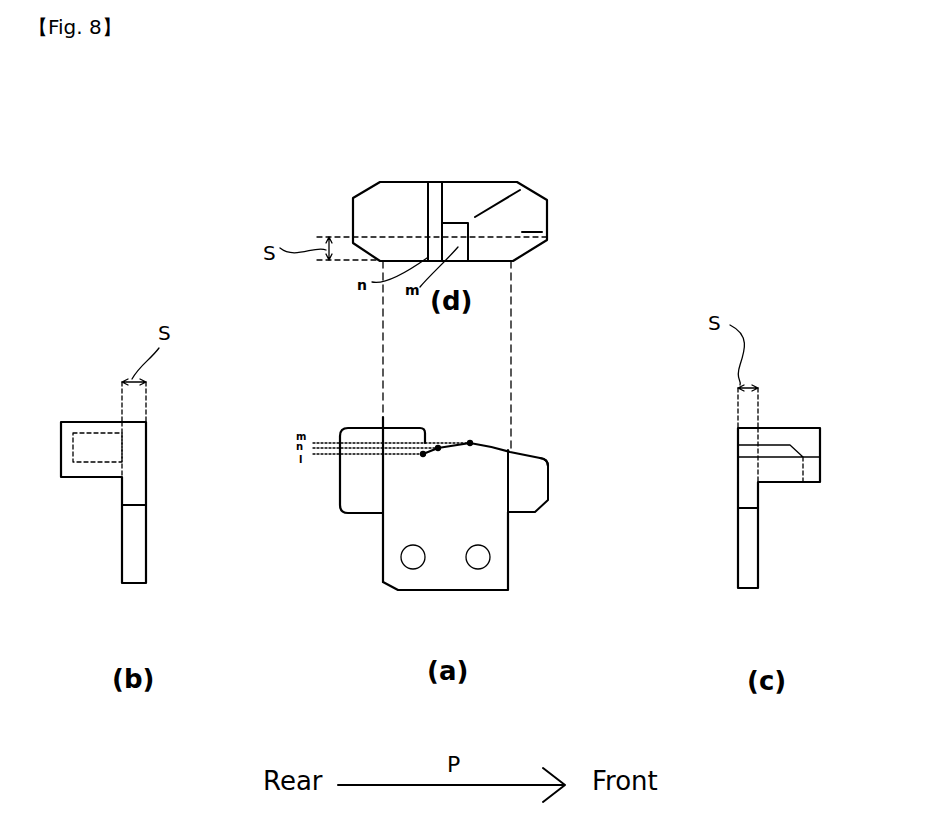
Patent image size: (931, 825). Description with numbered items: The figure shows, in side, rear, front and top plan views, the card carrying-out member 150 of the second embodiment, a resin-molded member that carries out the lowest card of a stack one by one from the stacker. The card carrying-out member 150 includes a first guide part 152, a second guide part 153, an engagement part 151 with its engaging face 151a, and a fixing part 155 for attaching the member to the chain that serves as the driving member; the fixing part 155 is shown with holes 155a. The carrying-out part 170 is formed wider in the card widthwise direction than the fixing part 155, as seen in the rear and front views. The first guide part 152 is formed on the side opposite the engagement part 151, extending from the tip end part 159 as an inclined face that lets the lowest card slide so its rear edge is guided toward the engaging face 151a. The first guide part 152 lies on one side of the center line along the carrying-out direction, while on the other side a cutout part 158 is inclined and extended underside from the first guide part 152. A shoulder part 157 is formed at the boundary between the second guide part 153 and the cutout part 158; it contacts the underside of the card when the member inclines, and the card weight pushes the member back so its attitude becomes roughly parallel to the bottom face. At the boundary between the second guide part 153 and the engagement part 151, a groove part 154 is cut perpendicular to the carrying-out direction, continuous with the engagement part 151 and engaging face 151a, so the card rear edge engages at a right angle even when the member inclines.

The card carrying-out member 150 is at (181, 238).
The engagement part 151 is at (427, 442).
The engaging face 151a is at (382, 417).
The first guide part 152 is at (548, 238).
The second guide part 153 is at (478, 262).
The groove part 154 is at (429, 212).
The fixing part 155 is at (402, 532).
The holes 155a is at (478, 563).
The shoulder part 157 is at (452, 222).
The cutout part 158 is at (477, 192).
The tip end part 159 is at (548, 457).
The carrying-out part 170 is at (137, 467).